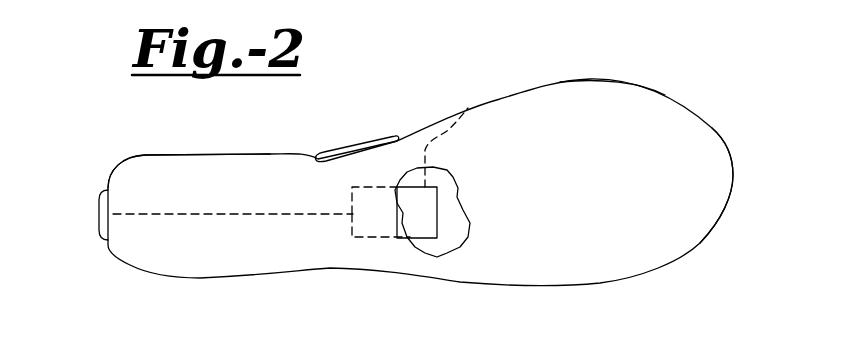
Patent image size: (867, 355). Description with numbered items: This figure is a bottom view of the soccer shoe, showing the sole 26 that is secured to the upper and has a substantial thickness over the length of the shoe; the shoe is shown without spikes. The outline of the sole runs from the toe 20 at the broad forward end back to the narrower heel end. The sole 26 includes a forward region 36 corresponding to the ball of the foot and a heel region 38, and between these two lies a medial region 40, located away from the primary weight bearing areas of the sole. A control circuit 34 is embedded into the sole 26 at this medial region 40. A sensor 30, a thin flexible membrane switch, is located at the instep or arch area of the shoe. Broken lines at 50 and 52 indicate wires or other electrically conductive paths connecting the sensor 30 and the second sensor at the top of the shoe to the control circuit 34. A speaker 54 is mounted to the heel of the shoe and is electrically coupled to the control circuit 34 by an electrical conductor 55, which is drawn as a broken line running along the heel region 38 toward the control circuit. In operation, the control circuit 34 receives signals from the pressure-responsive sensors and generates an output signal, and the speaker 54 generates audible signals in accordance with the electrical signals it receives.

The toe 20 is at (735, 158).
The sole 26 is at (580, 81).
The sensor 30 is at (356, 152).
The control circuit 34 is at (440, 223).
The forward region 36 is at (607, 213).
The heel region 38 is at (207, 177).
The medial region 40 is at (330, 237).
The broken line indicating conductive path 50 is at (368, 187).
The broken line indicating conductive path 52 is at (445, 133).
The speaker 54 is at (98, 198).
The electrical conductor 55 is at (180, 214).